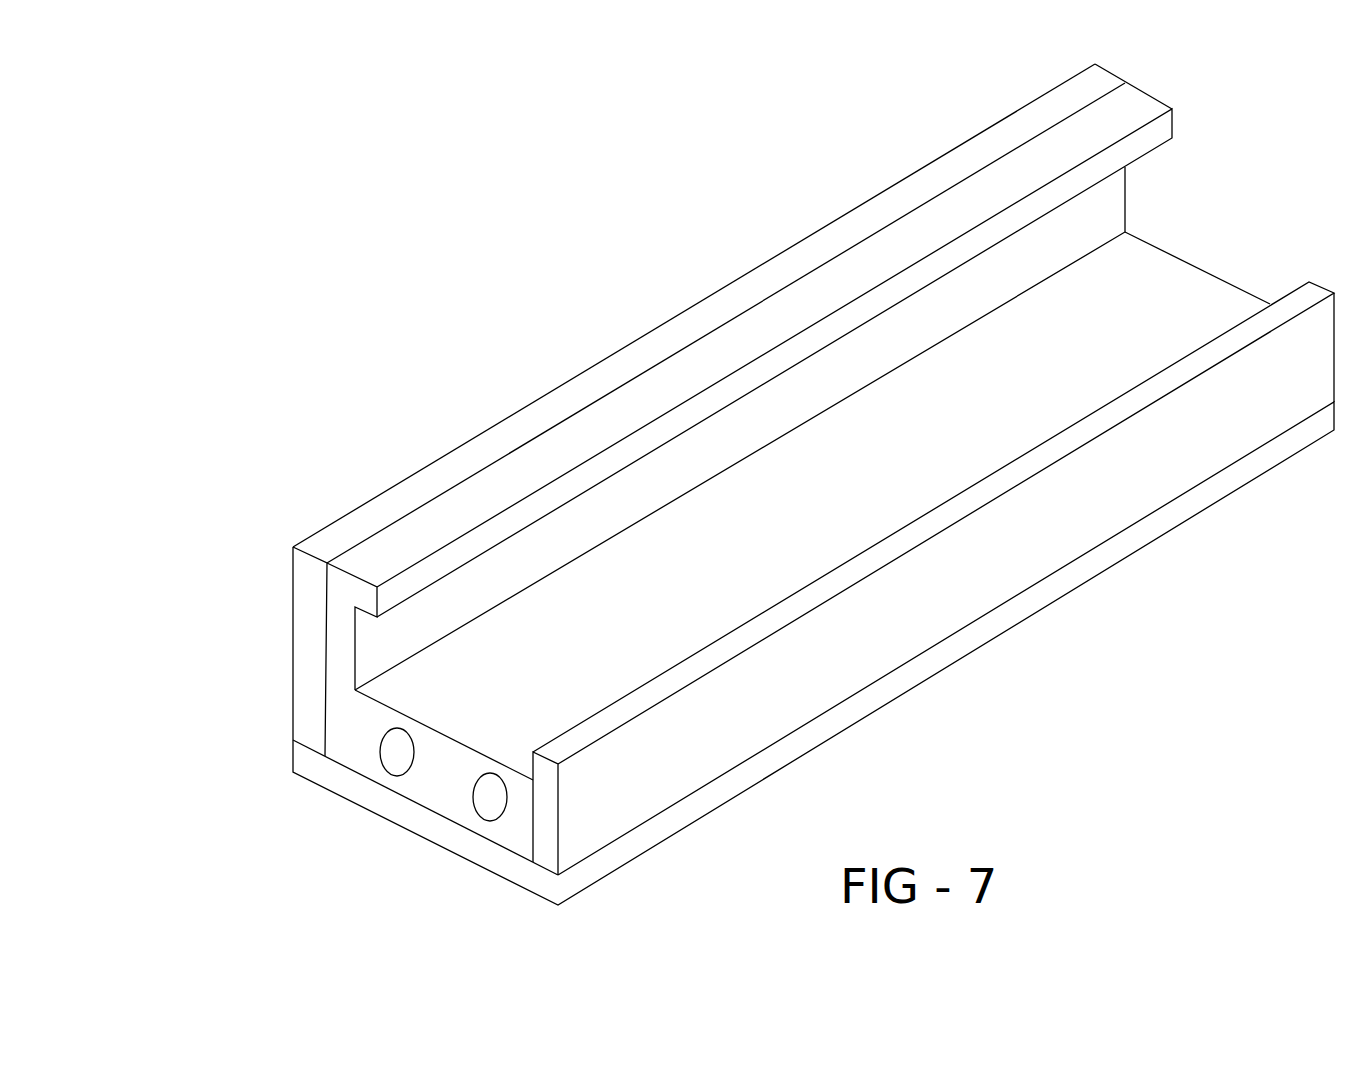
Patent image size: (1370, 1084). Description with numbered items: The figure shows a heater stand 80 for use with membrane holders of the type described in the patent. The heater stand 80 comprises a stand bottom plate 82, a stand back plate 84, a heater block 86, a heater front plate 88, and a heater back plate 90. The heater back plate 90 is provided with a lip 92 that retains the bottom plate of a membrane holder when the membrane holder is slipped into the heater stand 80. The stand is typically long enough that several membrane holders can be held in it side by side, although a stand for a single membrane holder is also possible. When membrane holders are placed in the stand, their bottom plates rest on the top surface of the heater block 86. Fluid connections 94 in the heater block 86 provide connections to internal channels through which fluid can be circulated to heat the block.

The heater stand 80 is at (868, 755).
The stand bottom plate 82 is at (468, 843).
The stand back plate 84 is at (308, 677).
The heater block 86 is at (450, 798).
The heater front plate 88 is at (545, 843).
The heater back plate 90 is at (391, 550).
The lip 92 is at (573, 443).
The fluid connections 94 is at (395, 763).